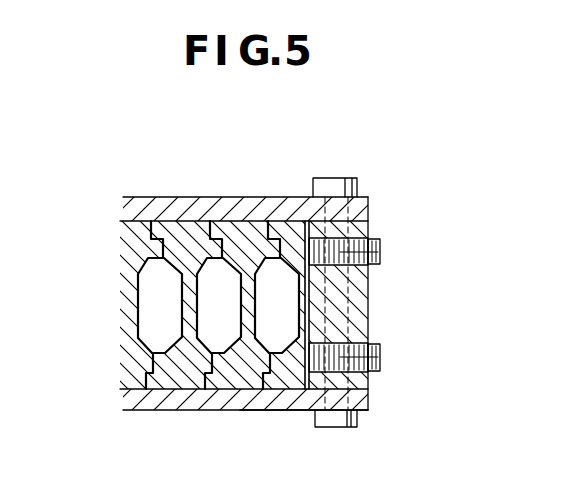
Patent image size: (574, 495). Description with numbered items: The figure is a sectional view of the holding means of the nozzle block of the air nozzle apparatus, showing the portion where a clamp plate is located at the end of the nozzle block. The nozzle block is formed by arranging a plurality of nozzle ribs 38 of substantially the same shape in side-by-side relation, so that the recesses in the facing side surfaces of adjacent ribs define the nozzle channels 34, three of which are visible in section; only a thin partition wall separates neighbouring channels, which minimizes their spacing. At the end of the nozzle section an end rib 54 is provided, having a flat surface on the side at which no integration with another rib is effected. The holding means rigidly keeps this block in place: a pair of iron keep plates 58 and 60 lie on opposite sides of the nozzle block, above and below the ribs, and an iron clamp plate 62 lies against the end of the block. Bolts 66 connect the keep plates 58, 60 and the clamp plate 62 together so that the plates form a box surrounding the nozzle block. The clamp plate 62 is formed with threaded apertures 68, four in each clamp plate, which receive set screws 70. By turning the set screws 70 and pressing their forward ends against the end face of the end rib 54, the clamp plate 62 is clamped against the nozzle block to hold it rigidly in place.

The nozzle channel 34 is at (145, 315).
The nozzle rib 38 is at (224, 232).
The end rib 54 is at (298, 392).
The keep plate 58 is at (243, 400).
The keep plate 60 is at (277, 206).
The clamp plate 62 is at (372, 317).
The bolt 66 is at (355, 191).
The threaded aperture 68 is at (377, 240).
The set screw 70 is at (383, 251).